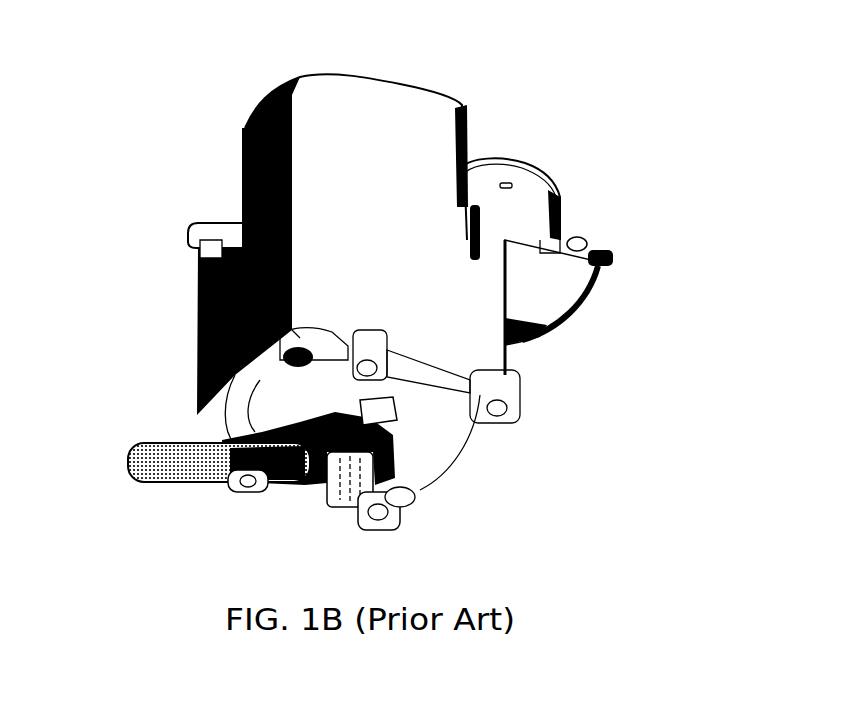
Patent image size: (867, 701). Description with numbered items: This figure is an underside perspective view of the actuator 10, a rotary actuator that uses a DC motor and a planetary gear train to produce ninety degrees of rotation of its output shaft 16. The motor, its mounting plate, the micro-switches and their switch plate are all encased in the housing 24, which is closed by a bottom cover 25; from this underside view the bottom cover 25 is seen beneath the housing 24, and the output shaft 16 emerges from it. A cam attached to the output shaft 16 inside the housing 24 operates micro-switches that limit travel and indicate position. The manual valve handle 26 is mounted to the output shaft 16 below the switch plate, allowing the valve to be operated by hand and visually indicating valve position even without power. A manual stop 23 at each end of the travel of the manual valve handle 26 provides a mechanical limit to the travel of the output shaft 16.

The actuator 10 is at (390, 300).
The housing 24 is at (413, 117).
The manual stop 23 is at (385, 407).
The bottom cover 25 is at (417, 493).
The manual valve handle 26 is at (150, 457).
The output shaft 16 is at (333, 500).